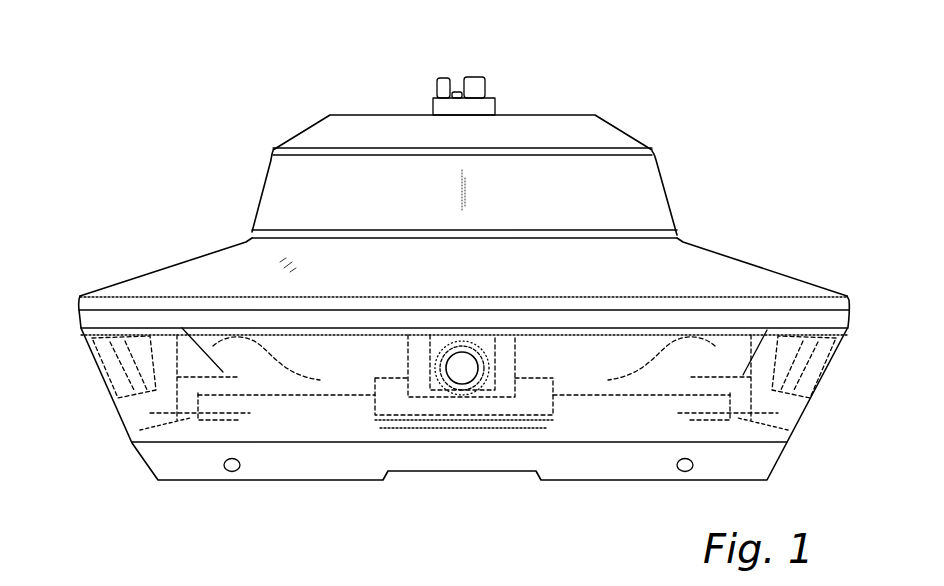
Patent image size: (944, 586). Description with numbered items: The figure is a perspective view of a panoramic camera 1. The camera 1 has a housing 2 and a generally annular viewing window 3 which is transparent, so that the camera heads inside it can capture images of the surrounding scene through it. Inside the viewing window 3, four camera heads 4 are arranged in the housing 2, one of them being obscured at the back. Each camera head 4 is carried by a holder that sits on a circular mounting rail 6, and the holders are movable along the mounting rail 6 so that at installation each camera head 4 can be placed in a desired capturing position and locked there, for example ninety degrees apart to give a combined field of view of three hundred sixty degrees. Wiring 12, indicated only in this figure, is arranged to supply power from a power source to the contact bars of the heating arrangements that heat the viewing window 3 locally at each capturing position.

The camera 1 is at (714, 83).
The housing 2 is at (757, 265).
The viewing window 3 is at (87, 345).
The camera head 4 is at (108, 373).
The mounting rail 6 is at (272, 397).
The wiring 12 is at (645, 377).